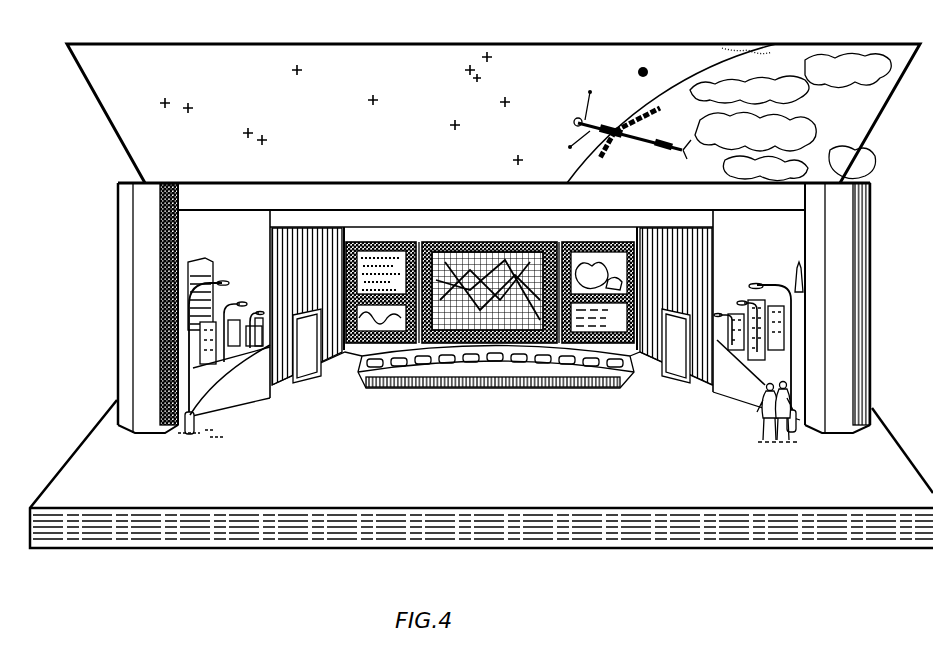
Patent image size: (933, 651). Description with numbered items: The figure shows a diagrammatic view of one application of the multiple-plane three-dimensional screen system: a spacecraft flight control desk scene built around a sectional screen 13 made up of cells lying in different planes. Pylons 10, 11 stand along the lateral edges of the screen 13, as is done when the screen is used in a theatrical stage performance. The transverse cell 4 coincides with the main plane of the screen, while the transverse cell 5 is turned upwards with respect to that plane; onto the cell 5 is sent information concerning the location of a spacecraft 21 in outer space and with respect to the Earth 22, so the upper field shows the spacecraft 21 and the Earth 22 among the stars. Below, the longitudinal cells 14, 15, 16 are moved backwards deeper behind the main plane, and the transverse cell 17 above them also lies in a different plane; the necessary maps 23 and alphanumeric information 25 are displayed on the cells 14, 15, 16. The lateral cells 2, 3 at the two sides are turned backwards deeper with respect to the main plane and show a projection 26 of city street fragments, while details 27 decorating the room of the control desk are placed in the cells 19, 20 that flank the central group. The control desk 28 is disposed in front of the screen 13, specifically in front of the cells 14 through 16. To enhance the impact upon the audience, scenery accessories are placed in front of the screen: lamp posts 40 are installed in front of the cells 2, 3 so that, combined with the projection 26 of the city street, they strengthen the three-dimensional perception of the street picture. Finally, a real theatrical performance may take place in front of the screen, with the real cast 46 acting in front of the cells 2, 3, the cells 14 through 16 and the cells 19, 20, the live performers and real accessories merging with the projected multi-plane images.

The lateral cell 2 is at (227, 400).
The lateral cell 3 is at (757, 395).
The transverse cell 4 is at (196, 198).
The transverse cell 5 is at (525, 62).
The pylon 10 is at (143, 298).
The pylon 11 is at (845, 298).
The sectional screen 13 is at (449, 43).
The longitudinal cell 14 is at (375, 236).
The longitudinal cell 15 is at (469, 236).
The longitudinal cell 16 is at (580, 233).
The transverse cell 17 is at (300, 220).
The cell 19 is at (280, 368).
The cell 20 is at (650, 363).
The spacecraft 21 is at (600, 135).
The Earth 22 is at (712, 80).
The maps 23 is at (437, 255).
The alphanumeric information 25 is at (396, 246).
The projection of street fragments 26 is at (236, 350).
The details 27 is at (320, 380).
The control desk 28 is at (605, 392).
The lamp posts 40 is at (186, 430).
The real cast 46 is at (768, 441).